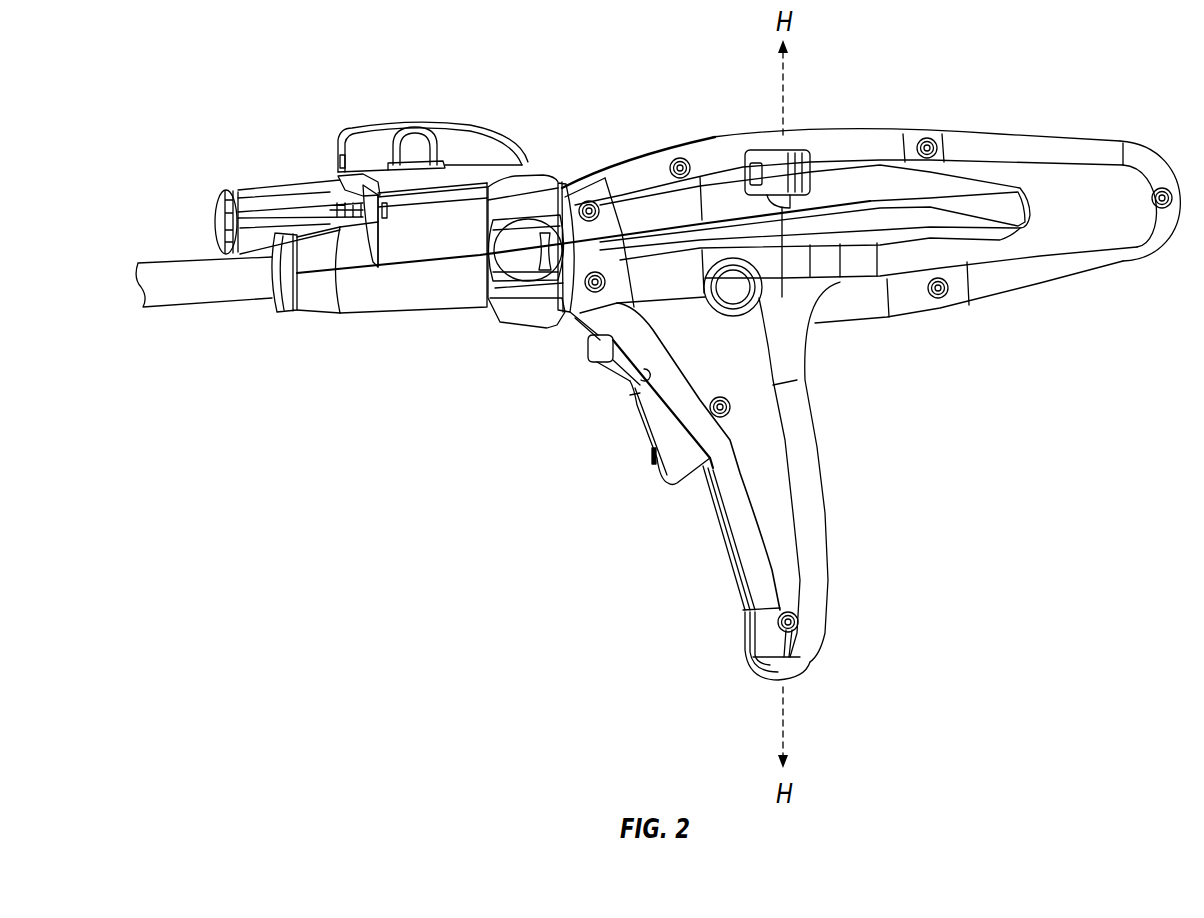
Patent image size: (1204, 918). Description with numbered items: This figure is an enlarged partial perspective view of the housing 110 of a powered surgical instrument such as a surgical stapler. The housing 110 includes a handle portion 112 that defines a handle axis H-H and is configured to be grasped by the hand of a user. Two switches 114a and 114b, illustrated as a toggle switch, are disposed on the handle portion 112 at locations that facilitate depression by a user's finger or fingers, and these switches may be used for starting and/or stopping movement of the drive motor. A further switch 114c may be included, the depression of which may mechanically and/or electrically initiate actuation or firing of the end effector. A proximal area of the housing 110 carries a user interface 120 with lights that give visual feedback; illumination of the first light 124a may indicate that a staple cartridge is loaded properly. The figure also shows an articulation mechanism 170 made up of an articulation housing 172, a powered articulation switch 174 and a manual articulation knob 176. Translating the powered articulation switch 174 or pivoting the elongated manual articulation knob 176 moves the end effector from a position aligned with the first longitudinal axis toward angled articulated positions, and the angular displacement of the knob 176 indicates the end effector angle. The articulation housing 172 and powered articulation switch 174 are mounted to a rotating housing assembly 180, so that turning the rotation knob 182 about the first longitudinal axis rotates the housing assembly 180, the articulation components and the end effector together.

The housing 110 is at (1060, 228).
The handle portion 112 is at (817, 503).
The switch 114a is at (653, 457).
The switch 114b is at (598, 365).
The switch 114c is at (735, 287).
The user interface 120 is at (854, 92).
The first light 124a is at (847, 128).
The articulation mechanism 170 is at (456, 109).
The articulation housing 172 is at (375, 302).
The powered articulation switch 174 is at (774, 148).
The manual articulation knob 176 is at (377, 137).
The rotating housing assembly 180 is at (574, 173).
The rotation knob 182 is at (522, 207).